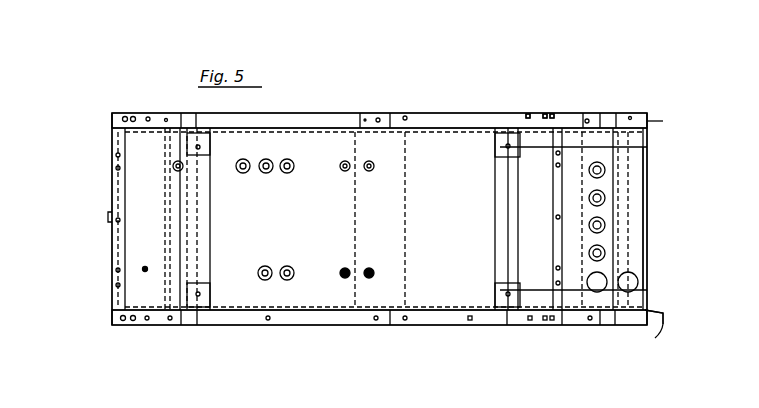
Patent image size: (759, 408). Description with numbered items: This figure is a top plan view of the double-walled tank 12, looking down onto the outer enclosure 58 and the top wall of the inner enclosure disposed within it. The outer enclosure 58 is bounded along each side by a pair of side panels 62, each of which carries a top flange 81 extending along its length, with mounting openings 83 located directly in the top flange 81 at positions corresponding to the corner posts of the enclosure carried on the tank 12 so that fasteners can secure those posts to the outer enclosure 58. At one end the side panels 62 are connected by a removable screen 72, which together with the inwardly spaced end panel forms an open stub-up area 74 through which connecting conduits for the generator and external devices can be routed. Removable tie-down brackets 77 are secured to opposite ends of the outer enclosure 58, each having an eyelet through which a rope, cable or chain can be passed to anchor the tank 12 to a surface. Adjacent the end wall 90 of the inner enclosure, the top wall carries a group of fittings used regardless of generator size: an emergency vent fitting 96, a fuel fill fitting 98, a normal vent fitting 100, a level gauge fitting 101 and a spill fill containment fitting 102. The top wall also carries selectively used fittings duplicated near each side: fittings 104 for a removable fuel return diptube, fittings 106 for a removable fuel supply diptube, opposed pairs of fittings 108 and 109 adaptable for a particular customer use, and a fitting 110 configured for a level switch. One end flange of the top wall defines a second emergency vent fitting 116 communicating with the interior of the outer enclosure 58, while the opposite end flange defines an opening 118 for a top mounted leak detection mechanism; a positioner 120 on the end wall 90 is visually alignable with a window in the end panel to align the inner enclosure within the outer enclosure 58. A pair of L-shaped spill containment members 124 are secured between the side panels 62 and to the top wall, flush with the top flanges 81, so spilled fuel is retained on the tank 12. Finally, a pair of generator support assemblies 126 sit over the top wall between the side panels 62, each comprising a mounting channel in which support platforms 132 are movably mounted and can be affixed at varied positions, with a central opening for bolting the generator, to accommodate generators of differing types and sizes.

The tank 12 is at (504, 101).
The outer enclosure 58 is at (462, 108).
The side panels 62 is at (440, 320).
The removable screen 72 is at (112, 200).
The stub-up area 74 is at (145, 269).
The tie-down brackets 77 is at (659, 120).
The top flange 81 is at (510, 116).
The mounting openings 83 is at (556, 113).
The end wall 90 is at (650, 146).
The emergency vent fitting 96 is at (628, 273).
The fuel fill fitting 98 is at (606, 199).
The normal vent fitting 100 is at (606, 253).
The level gauge fitting 101 is at (606, 226).
The spill fill containment fitting 102 is at (606, 171).
The fittings for fuel return diptube 104 is at (343, 161).
The fittings for fuel supply diptube 106 is at (366, 161).
The fittings 108 is at (289, 158).
The fittings 109 is at (268, 158).
The level switch fitting 110 is at (245, 158).
The second emergency vent fitting 116 is at (647, 310).
The leak detection opening 118 is at (181, 160).
The positioner 120 is at (660, 211).
The spill containment members 124 is at (552, 253).
The generator support assemblies 126 is at (197, 322).
The support platforms 132 is at (502, 282).